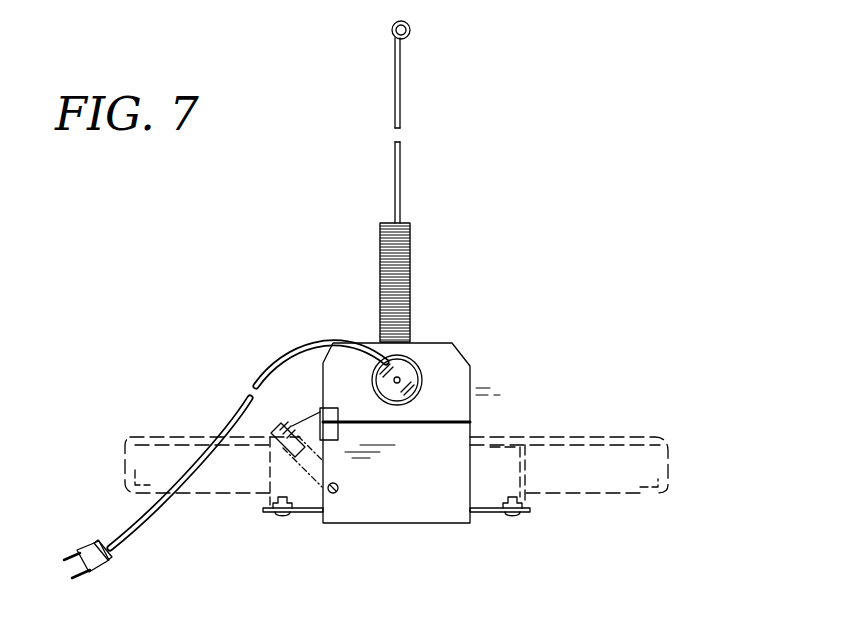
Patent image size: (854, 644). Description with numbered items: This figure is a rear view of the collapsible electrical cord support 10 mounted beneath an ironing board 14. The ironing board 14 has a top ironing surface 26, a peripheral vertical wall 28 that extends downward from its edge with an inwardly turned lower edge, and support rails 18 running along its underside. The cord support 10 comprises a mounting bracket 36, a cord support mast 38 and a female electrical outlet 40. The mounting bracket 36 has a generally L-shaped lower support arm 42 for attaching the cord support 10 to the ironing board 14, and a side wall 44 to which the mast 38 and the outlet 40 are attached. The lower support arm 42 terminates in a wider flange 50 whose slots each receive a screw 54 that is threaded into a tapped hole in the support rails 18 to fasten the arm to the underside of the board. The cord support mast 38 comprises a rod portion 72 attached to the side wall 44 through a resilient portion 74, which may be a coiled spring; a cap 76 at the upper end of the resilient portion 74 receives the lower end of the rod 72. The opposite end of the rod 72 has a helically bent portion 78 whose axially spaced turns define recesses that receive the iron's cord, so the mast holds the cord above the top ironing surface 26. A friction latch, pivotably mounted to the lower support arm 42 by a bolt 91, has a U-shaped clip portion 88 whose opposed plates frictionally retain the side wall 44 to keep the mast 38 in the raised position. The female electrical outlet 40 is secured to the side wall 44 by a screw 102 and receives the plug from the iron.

The collapsible electrical cord support 10 is at (358, 302).
The ironing board 14 is at (427, 459).
The support rails 18 is at (527, 467).
The top ironing surface 26 is at (585, 436).
The peripheral vertical wall 28 is at (660, 493).
The mounting bracket 36 is at (492, 419).
The cord support mast 38 is at (445, 174).
The female electrical outlet 40 is at (410, 362).
The lower support arm 42 is at (390, 505).
The side wall 44 is at (470, 393).
The flange 50 is at (483, 513).
The screw 54 is at (516, 512).
The rod portion 72 is at (400, 95).
The resilient portion 74 is at (403, 262).
The cap 76 is at (400, 212).
The helically bent portion 78 is at (410, 32).
The clip portion 88 is at (320, 415).
The bolt 91 is at (337, 492).
The screw 102 is at (399, 380).